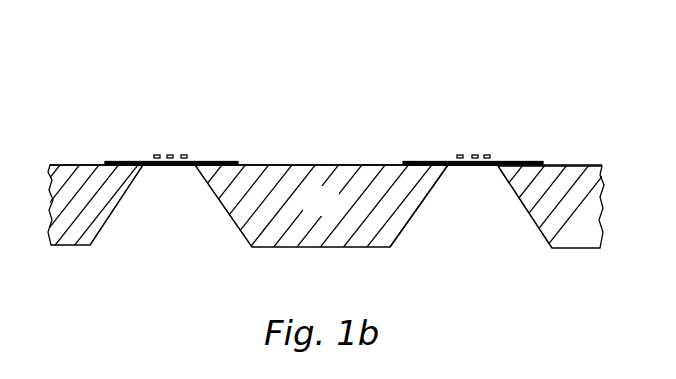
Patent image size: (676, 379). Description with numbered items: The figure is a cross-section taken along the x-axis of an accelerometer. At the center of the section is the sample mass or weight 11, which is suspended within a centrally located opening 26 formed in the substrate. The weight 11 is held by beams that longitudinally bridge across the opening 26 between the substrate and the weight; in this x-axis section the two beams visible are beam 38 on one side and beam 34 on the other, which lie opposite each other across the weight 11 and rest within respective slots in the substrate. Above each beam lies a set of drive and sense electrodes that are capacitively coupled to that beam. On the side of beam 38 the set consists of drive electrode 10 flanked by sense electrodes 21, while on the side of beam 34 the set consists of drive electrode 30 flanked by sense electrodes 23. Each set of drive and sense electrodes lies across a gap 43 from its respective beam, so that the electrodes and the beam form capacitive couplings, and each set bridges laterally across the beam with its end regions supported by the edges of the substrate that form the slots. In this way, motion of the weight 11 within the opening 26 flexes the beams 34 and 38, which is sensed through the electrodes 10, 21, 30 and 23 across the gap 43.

The drive electrode 10 is at (170, 154).
The sample mass 11 is at (310, 211).
The sense electrode 21 is at (157, 154).
The sense electrode 23 is at (460, 154).
The opening 26 is at (185, 223).
The drive electrode 30 is at (475, 154).
The beam 34 is at (476, 167).
The beam 38 is at (169, 167).
The gap 43 is at (145, 160).